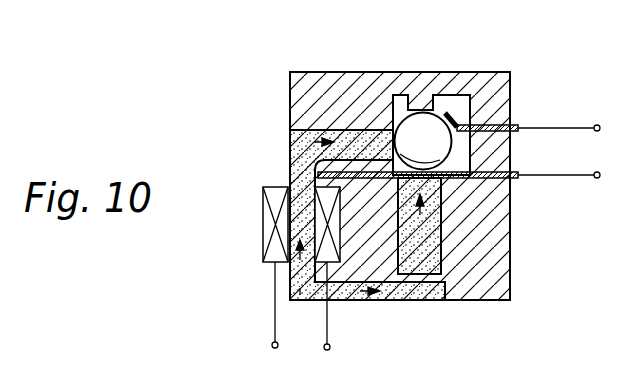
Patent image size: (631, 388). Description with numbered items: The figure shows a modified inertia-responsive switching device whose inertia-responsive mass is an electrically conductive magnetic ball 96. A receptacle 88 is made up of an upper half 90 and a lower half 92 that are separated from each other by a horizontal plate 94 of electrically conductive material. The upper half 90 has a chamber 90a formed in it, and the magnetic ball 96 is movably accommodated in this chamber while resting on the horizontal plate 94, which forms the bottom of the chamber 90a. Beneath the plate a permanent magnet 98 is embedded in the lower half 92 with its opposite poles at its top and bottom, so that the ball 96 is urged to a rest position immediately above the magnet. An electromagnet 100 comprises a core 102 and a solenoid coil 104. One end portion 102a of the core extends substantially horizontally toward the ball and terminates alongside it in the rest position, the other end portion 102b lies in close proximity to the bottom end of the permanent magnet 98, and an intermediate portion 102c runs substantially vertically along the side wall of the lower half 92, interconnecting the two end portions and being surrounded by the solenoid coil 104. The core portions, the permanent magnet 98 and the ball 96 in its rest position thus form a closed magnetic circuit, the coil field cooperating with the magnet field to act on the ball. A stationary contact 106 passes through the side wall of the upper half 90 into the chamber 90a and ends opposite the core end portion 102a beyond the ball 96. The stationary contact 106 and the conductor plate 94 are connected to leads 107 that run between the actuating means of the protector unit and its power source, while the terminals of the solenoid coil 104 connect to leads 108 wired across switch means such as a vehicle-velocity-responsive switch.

The receptacle 88 is at (283, 97).
The upper half of receptacle 90 is at (502, 90).
The chamber 90a is at (447, 103).
The lower half of receptacle 92 is at (498, 258).
The horizontal plate 94 is at (483, 178).
The magnetic ball 96 is at (417, 122).
The permanent magnet 98 is at (430, 255).
The electromagnet 100 is at (280, 163).
The core 102 is at (290, 193).
The upper end portion of core 102a is at (322, 128).
The lower end portion of core 102b is at (403, 300).
The intermediate portion of core 102c is at (288, 173).
The solenoid coil 104 is at (267, 245).
The stationary contact 106 is at (477, 92).
The lead 107 is at (563, 128).
The lead 108 is at (272, 345).